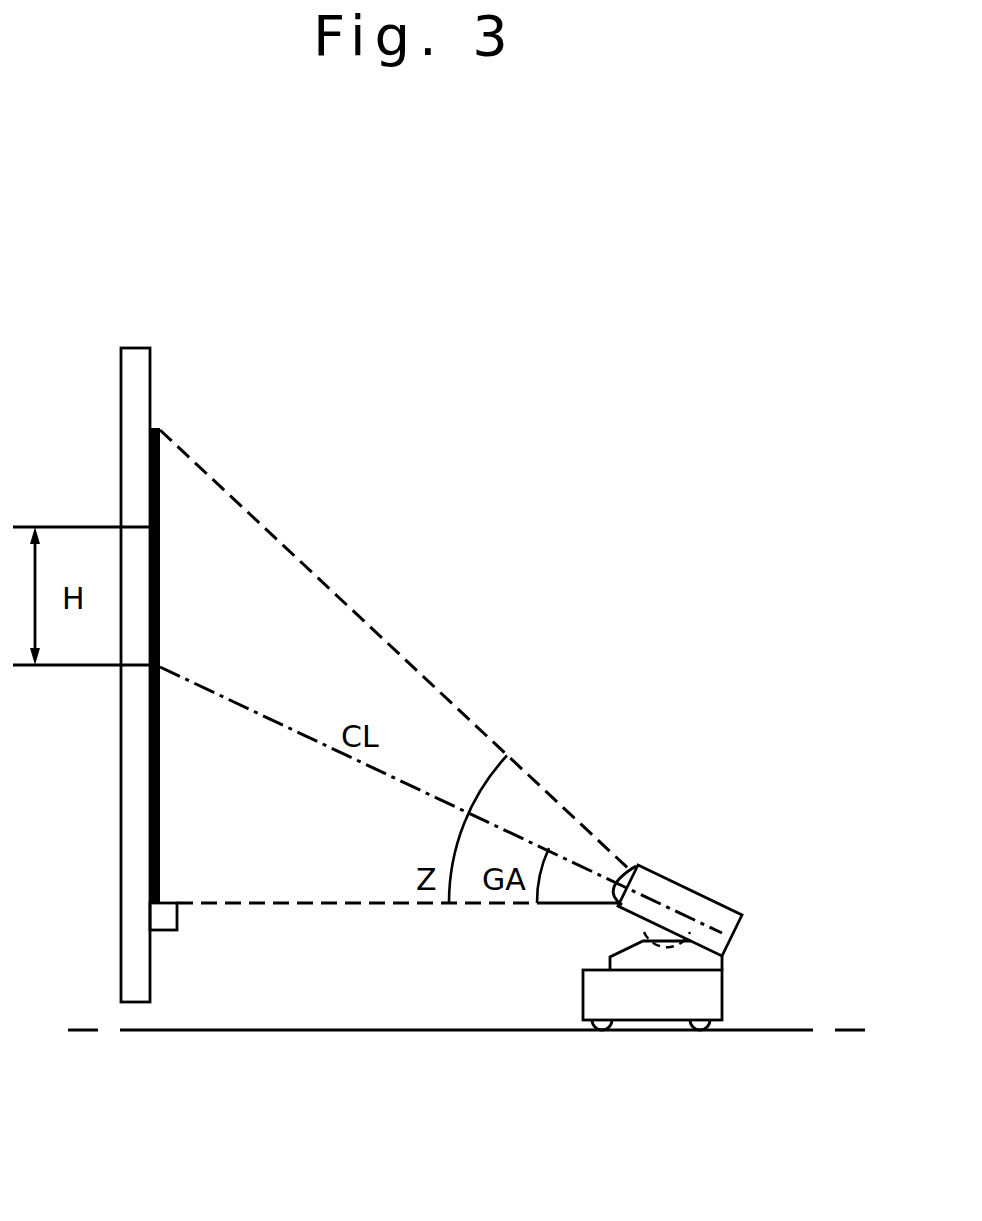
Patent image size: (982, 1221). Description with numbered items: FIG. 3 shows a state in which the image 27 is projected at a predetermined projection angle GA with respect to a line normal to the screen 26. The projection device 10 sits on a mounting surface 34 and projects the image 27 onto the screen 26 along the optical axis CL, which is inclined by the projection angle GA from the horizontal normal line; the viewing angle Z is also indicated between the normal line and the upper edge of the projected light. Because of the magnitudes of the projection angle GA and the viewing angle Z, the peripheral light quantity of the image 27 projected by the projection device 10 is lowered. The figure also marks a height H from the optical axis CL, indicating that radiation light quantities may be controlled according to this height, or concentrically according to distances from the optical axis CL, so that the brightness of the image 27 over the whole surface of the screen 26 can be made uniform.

The screen 26 is at (133, 384).
The image 27 is at (161, 466).
The projection device 10 is at (733, 898).
The mounting surface 34 is at (255, 1029).